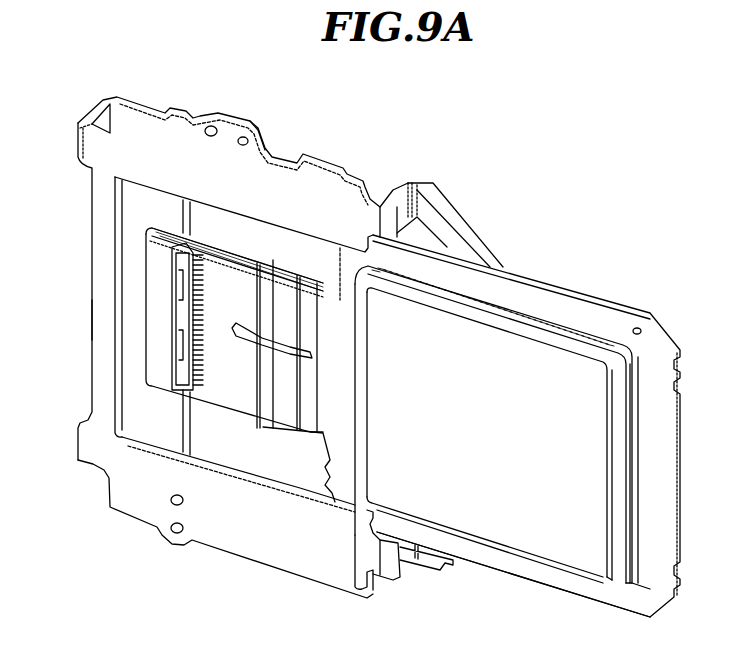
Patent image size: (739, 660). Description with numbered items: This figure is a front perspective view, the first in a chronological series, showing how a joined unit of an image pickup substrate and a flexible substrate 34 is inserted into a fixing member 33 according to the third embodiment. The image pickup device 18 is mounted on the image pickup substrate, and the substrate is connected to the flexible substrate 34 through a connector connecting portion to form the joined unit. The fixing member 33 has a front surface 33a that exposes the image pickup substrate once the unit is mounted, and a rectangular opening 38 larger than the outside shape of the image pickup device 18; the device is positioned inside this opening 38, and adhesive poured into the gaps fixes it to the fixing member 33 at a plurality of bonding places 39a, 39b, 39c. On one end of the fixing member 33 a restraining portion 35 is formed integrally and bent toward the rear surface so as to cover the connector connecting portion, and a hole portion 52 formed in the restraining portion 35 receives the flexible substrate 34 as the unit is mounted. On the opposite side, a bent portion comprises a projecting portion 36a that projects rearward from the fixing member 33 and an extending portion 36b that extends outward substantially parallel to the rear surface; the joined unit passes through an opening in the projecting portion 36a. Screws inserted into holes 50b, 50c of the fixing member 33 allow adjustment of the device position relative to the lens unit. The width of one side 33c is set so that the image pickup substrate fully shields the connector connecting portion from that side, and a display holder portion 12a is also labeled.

The display holder portion 12a is at (307, 470).
The image pickup device 18 is at (565, 550).
The fixing member 33 is at (334, 195).
The front surface 33a is at (272, 190).
The side 33c is at (108, 322).
The flexible substrate 34 is at (268, 420).
The restraining portion 35 is at (142, 197).
The projecting portion 36a is at (408, 200).
The extending portion 36b is at (450, 228).
The opening 38 is at (145, 400).
The bonding place 39a is at (355, 490).
The bonding place 39b is at (518, 325).
The bonding place 39c is at (480, 550).
The hole 50b is at (214, 128).
The hole 50c is at (170, 505).
The hole portion 52 is at (90, 187).